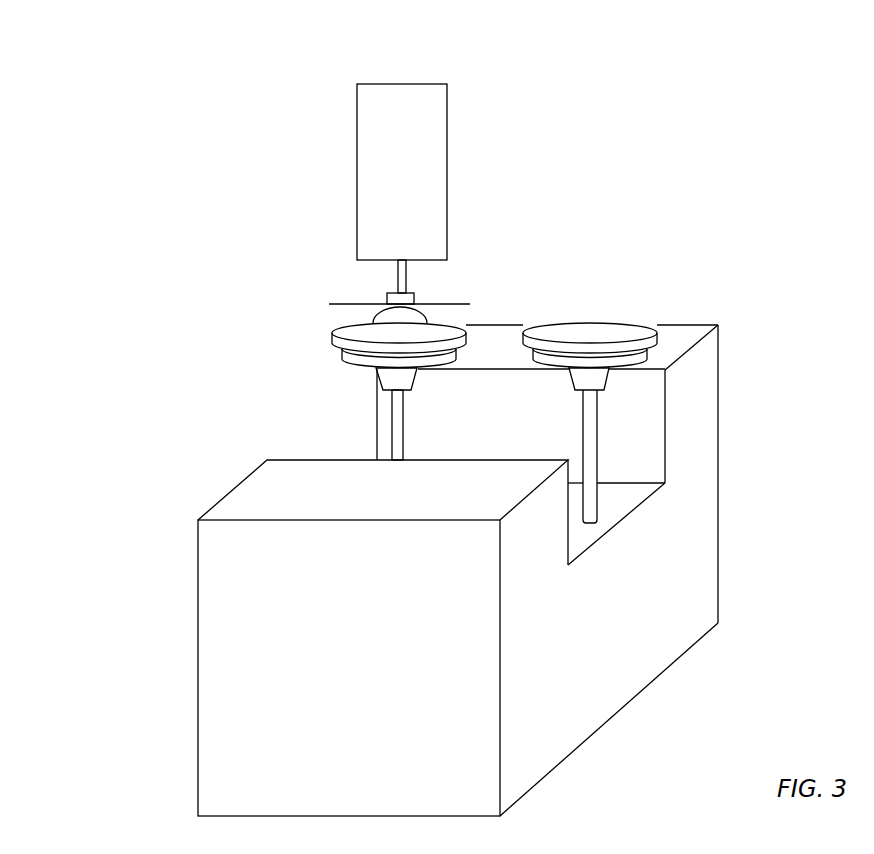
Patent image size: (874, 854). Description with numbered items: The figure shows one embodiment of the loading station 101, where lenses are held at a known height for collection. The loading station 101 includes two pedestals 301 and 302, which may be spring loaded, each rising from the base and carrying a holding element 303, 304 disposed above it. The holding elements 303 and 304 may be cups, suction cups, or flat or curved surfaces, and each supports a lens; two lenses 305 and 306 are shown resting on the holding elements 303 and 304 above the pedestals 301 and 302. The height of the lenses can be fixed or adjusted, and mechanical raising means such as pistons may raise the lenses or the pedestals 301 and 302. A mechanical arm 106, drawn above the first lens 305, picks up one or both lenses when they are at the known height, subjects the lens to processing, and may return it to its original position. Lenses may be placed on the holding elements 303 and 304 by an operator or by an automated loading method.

The loading station 101 is at (135, 638).
The mechanical arm 106 is at (404, 53).
The pedestal 301 is at (382, 413).
The pedestal 302 is at (606, 457).
The holding element 303 is at (329, 352).
The holding element 304 is at (617, 379).
The lens 305 is at (452, 332).
The lens 306 is at (583, 335).